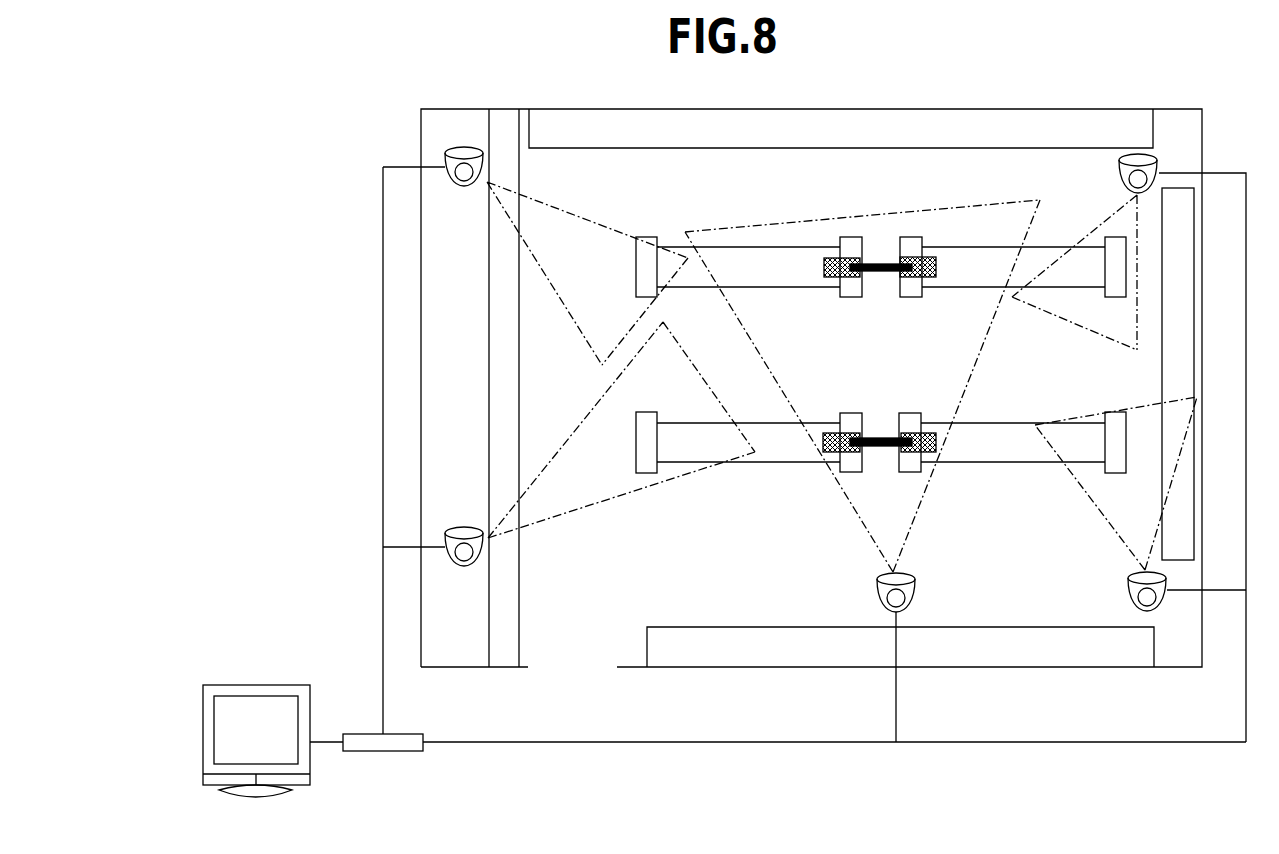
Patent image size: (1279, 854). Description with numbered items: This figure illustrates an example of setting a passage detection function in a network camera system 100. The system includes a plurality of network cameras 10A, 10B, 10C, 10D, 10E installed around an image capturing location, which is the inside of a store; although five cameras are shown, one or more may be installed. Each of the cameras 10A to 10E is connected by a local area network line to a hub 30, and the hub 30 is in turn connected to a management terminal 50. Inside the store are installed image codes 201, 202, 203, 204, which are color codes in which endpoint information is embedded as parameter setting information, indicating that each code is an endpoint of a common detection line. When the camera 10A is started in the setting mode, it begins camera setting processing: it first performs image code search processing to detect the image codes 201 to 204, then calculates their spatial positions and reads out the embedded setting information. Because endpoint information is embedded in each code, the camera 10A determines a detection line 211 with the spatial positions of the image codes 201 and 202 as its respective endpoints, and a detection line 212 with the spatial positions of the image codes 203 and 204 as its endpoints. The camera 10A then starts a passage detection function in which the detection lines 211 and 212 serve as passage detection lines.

The network camera system 100 is at (343, 283).
The network camera 10A is at (918, 590).
The network camera 10B is at (464, 187).
The network camera 10C is at (462, 527).
The network camera 10D is at (1118, 175).
The network camera 10E is at (1128, 590).
The image code 201 is at (833, 278).
The image code 202 is at (928, 278).
The image code 203 is at (833, 432).
The image code 204 is at (925, 432).
The detection line 211 is at (880, 271).
The detection line 212 is at (880, 438).
The hub 30 is at (412, 734).
The management terminal 50 is at (258, 685).